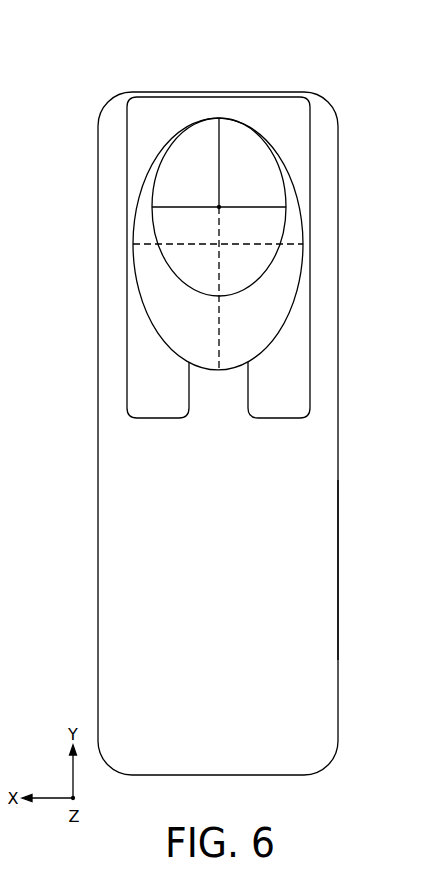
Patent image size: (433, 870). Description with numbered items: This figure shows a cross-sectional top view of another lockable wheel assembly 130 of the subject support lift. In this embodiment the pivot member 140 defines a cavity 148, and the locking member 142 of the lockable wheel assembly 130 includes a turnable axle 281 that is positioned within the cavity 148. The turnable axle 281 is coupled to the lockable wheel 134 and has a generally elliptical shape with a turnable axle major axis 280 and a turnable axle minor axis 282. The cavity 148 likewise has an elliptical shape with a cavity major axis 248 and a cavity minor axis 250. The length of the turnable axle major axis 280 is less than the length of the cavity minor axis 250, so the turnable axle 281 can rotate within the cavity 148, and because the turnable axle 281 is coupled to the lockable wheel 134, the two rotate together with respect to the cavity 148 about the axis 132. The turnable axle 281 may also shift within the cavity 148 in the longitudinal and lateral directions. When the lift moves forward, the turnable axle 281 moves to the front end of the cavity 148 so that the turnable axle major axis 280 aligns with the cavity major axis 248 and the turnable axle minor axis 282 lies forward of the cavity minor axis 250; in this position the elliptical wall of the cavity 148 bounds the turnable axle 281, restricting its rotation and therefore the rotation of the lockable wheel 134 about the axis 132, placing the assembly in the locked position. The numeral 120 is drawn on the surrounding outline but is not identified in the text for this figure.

The substrate 120 is at (330, 582).
The lockable wheel assembly 130 is at (241, 393).
The axis 132 is at (218, 206).
The lockable wheel 134 is at (281, 412).
The pivot member 140 is at (260, 190).
The locking member 142 is at (185, 129).
The cavity 148 is at (285, 300).
The cavity major axis 248 is at (218, 334).
The cavity minor axis 250 is at (136, 245).
The turnable axle major axis 280 is at (210, 122).
The turnable axle 281 is at (253, 129).
The turnable axle minor axis 282 is at (283, 205).